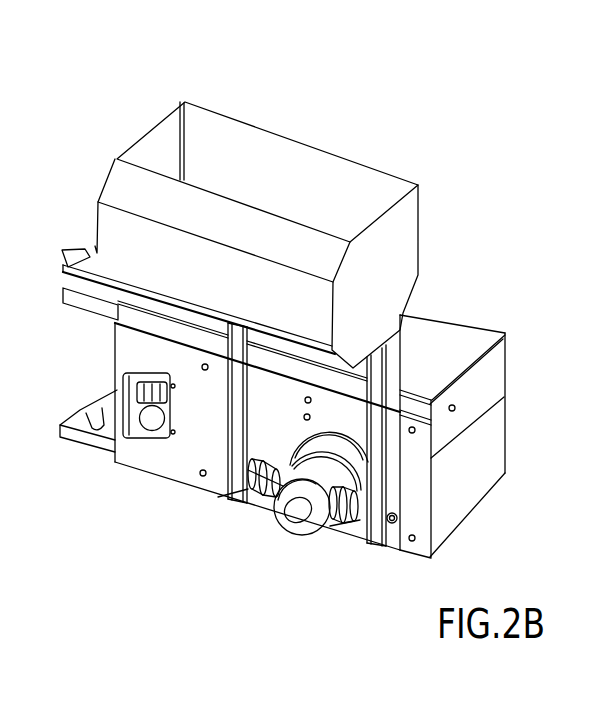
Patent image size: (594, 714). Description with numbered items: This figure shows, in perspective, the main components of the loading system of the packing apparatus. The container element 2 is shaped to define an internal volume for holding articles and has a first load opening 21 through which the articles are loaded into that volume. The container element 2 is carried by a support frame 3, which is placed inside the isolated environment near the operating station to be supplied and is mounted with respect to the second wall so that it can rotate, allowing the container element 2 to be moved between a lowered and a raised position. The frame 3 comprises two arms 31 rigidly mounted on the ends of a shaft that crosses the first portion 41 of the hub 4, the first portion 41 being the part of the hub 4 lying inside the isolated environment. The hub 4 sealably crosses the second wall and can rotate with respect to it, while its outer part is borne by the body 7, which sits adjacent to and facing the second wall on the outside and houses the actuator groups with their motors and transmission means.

The container element 2 is at (442, 242).
The first load opening 21 is at (356, 176).
The support frame 3 is at (210, 424).
The arms 31 is at (240, 460).
The hub 4 is at (350, 435).
The first portion of the hub 41 is at (267, 498).
The body 7 is at (464, 340).